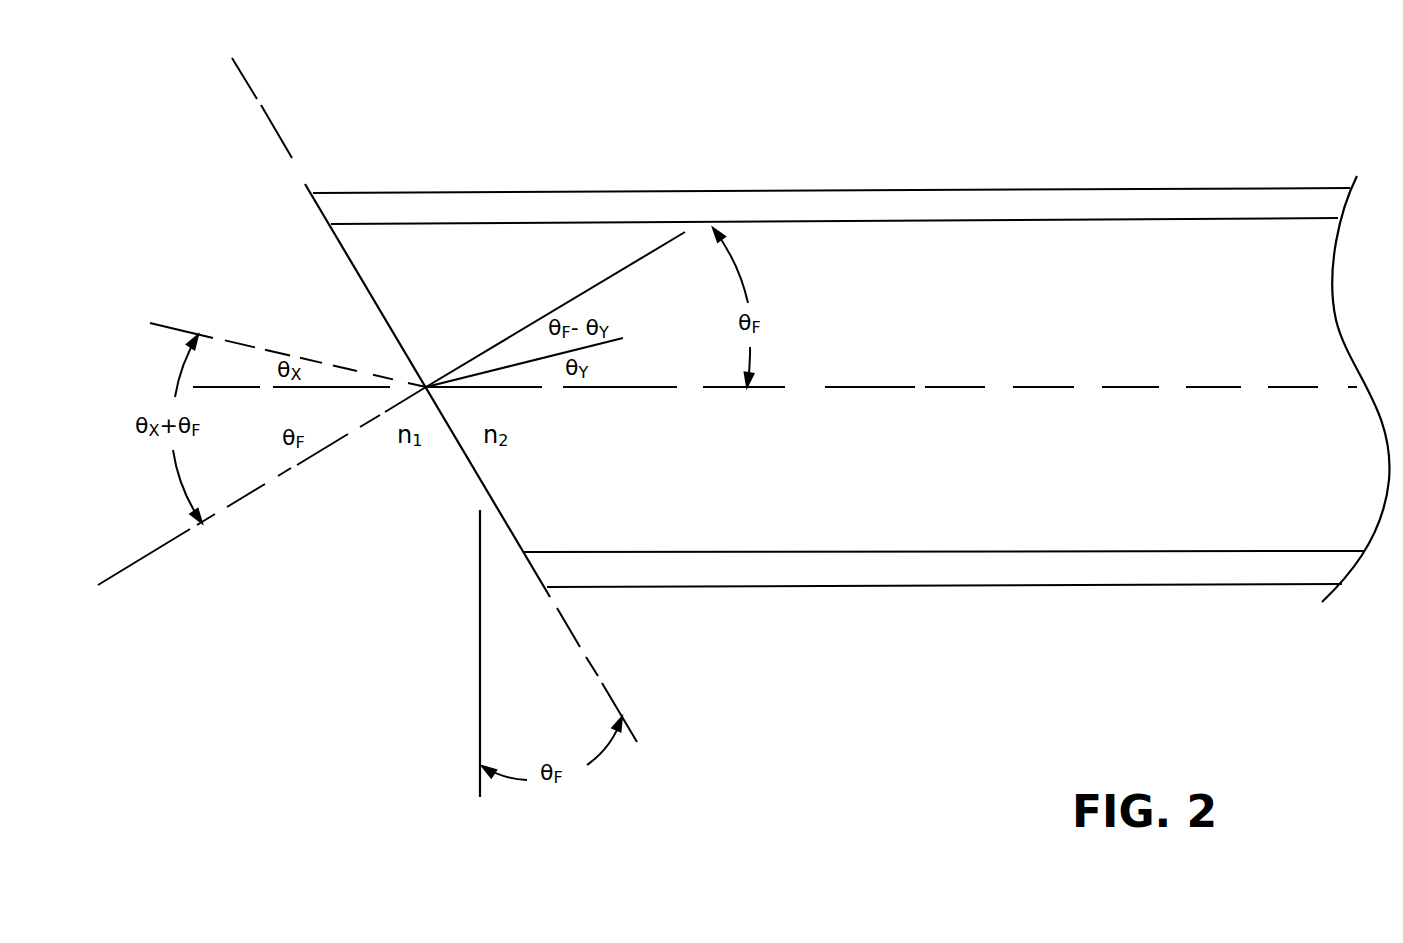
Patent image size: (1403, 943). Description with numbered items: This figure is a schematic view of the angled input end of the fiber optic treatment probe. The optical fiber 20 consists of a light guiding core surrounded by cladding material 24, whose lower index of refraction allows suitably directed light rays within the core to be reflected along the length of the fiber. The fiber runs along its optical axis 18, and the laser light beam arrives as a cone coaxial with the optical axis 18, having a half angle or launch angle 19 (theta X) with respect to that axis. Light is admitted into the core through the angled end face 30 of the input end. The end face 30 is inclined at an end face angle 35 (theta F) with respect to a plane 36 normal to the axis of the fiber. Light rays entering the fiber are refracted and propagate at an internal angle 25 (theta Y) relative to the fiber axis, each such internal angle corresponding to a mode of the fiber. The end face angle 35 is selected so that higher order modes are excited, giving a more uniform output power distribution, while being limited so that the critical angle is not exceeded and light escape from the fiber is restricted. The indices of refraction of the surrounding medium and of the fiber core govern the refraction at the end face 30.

The optical axis 18 is at (850, 388).
The half angle (launch angle) 19 is at (273, 370).
The optical fiber 20 is at (1111, 320).
The cladding material 24 is at (823, 203).
The internal angle (theta Y) 25 is at (598, 368).
The angled end face 30 is at (463, 458).
The end face angle (theta F) 35 is at (282, 442).
The plane normal to the axis of the fiber 36 is at (480, 710).